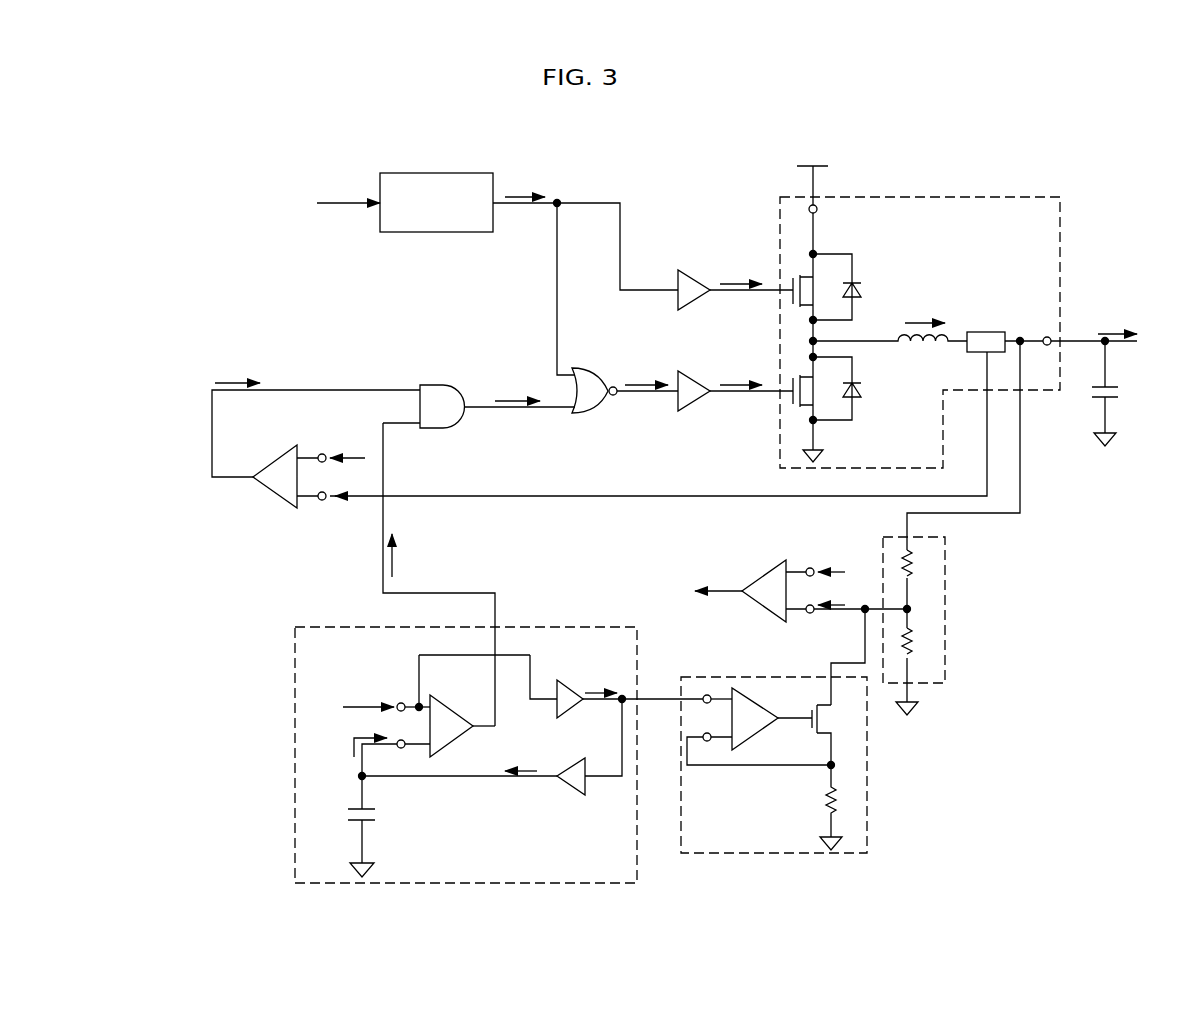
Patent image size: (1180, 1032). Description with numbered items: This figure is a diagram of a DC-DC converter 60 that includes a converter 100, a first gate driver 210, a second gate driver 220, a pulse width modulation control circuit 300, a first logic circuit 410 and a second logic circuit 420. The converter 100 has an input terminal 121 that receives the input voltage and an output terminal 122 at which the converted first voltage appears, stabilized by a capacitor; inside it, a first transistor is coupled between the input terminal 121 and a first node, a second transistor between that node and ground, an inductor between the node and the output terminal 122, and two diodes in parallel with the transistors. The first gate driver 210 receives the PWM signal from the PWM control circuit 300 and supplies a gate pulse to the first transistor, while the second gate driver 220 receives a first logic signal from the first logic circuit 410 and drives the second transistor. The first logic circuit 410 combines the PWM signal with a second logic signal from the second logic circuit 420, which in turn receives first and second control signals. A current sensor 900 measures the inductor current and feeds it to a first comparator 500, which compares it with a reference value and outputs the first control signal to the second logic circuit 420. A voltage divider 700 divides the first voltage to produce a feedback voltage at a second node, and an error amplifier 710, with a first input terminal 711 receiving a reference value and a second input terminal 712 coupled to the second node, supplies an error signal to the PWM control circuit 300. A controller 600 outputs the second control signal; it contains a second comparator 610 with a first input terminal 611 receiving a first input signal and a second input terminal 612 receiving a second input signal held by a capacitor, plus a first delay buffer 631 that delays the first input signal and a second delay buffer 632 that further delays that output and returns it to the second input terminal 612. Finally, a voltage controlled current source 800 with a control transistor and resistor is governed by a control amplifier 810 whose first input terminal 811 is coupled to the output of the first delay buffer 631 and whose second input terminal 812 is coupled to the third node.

The DC-DC converter 60 is at (222, 213).
The converter 100 is at (920, 197).
The input terminal 121 is at (817, 209).
The output terminal 122 is at (1047, 337).
The first gate driver 210 is at (690, 273).
The second gate driver 220 is at (690, 373).
The pulse width modulation (PWM) control circuit 300 is at (445, 173).
The first logic circuit 410 is at (583, 368).
The second logic circuit 420 is at (432, 385).
The first comparator 500 is at (275, 502).
The controller 600 is at (295, 755).
The second comparator 610 is at (452, 745).
The first input terminal 611 is at (401, 703).
The second input terminal 612 is at (402, 750).
The first delay buffer 631 is at (567, 690).
The second delay buffer 632 is at (575, 792).
The voltage divider 700 is at (948, 607).
The error amplifier 710 is at (765, 568).
The first input terminal 711 is at (810, 568).
The second input terminal 712 is at (812, 613).
The voltage controlled current source 800 is at (867, 762).
The control amplifier 810 is at (755, 745).
The first input terminal 811 is at (707, 695).
The second input terminal 812 is at (709, 742).
The current sensor 900 is at (987, 332).